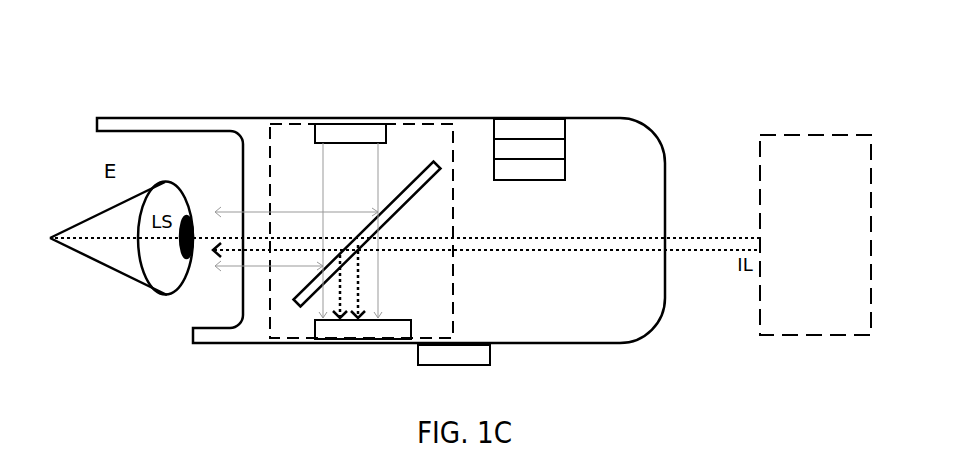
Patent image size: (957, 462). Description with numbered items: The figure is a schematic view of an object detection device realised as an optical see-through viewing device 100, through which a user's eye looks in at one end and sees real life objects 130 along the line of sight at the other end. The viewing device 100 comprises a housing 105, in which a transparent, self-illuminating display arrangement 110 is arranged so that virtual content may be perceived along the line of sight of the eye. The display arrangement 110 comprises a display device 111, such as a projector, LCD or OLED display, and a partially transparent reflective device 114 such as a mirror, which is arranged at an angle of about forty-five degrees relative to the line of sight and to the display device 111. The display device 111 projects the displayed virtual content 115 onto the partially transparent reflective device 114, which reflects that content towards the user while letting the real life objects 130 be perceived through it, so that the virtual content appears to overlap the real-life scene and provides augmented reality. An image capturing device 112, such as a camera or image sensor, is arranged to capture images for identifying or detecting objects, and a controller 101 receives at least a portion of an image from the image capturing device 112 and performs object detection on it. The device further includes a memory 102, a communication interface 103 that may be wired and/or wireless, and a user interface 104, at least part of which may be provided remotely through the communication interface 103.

The optical see-through viewing device 100 is at (200, 76).
The housing 105 is at (283, 118).
The display arrangement 110 is at (410, 121).
The display device 111 is at (350, 134).
The image capturing device 112 is at (363, 330).
The partially transparent reflective device 114 is at (441, 168).
The displayed virtual content 115 is at (298, 230).
The controller 101 is at (529, 129).
The memory 102 is at (529, 149).
The communication interface 103 is at (529, 169).
The user interface 104 is at (454, 355).
The real life objects / field of view 130 is at (815, 235).